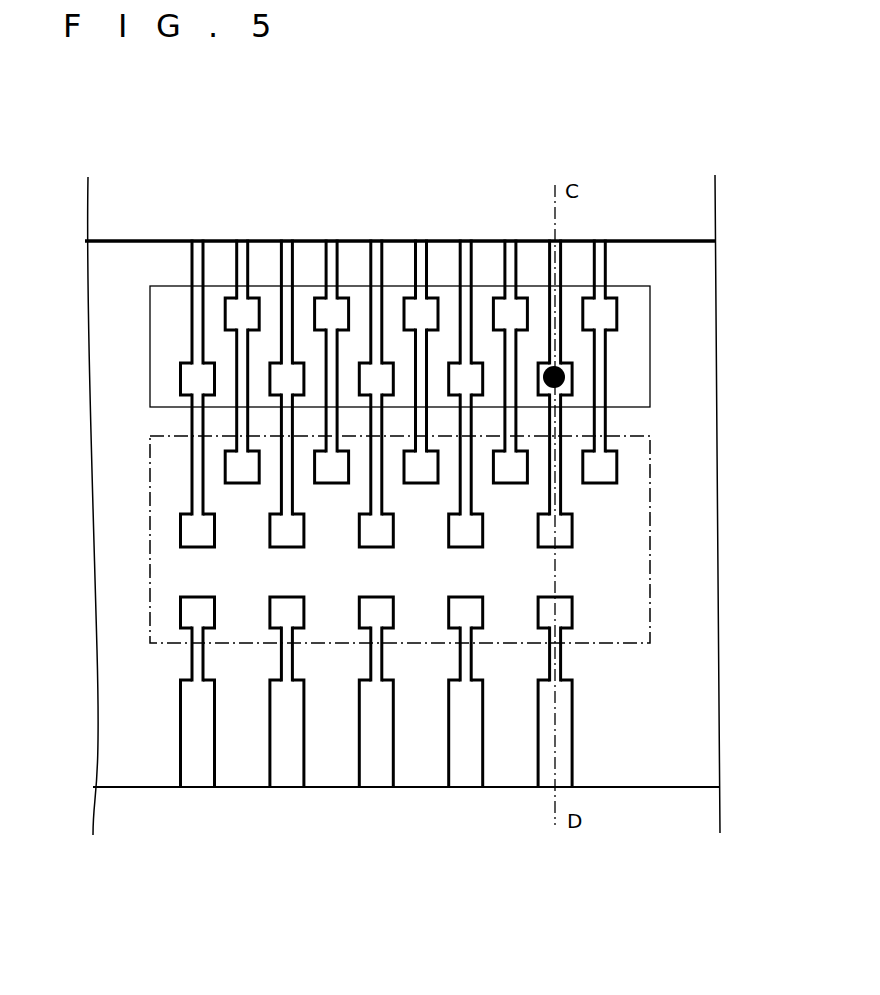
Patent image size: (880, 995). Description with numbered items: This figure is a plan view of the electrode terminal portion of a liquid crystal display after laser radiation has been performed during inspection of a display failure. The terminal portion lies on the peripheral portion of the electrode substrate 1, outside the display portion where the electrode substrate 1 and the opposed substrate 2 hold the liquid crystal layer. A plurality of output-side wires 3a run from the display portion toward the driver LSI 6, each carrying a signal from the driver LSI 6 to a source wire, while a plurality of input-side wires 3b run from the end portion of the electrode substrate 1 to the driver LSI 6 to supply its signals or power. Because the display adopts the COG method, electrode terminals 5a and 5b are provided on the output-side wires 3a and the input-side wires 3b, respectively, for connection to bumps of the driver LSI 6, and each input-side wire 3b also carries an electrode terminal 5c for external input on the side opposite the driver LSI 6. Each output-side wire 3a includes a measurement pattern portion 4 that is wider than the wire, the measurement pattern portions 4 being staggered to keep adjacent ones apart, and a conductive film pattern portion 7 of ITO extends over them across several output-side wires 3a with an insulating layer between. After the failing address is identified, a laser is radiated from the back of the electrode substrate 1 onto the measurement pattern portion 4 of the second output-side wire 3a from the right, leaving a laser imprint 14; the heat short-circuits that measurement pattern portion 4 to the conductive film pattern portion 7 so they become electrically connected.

The electrode substrate 1 is at (112, 431).
The opposed substrate 2 is at (112, 218).
The output-side wire 3a is at (602, 258).
The input-side wire 3b is at (561, 660).
The measurement pattern portion 4 is at (600, 314).
The electrode terminal 5a is at (617, 463).
The electrode terminal 5b is at (573, 605).
The electrode terminal for external input 5c is at (573, 728).
The driver LSI 6 is at (628, 542).
The conductive film pattern portion 7 is at (628, 348).
The laser imprint 14 is at (565, 377).